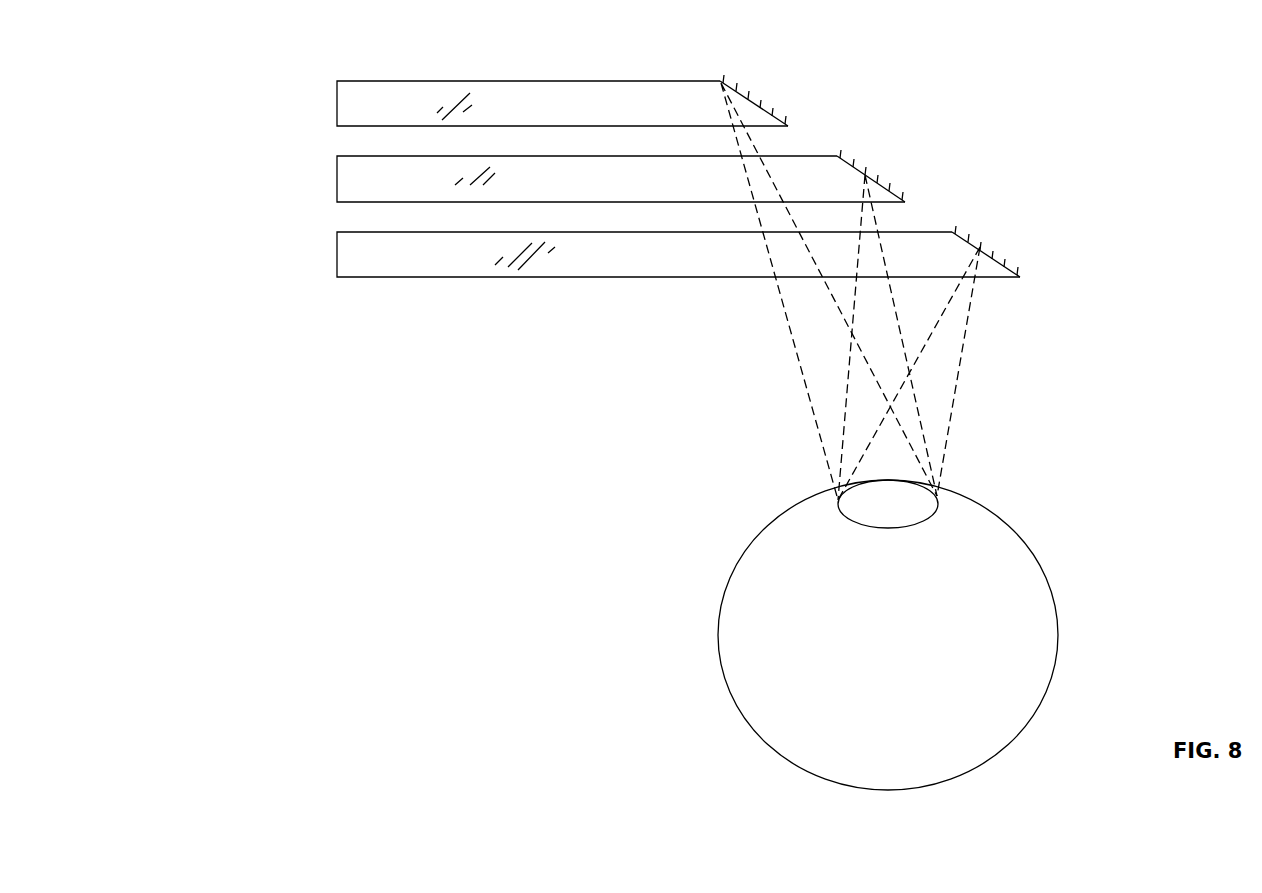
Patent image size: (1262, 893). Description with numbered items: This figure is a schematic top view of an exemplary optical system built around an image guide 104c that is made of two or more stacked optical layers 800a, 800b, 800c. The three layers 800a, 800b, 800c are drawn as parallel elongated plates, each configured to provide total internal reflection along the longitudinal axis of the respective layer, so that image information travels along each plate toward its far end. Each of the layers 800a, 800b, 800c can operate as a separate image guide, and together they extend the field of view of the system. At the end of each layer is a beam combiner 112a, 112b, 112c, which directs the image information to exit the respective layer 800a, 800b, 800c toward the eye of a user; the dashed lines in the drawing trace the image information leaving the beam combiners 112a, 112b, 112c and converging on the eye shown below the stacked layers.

The image guide 104c is at (390, 46).
The optical layer 800a is at (343, 92).
The optical layer 800b is at (343, 185).
The optical layer 800c is at (345, 262).
The beam combiner 112a is at (762, 100).
The beam combiner 112b is at (863, 172).
The beam combiner 112c is at (985, 248).